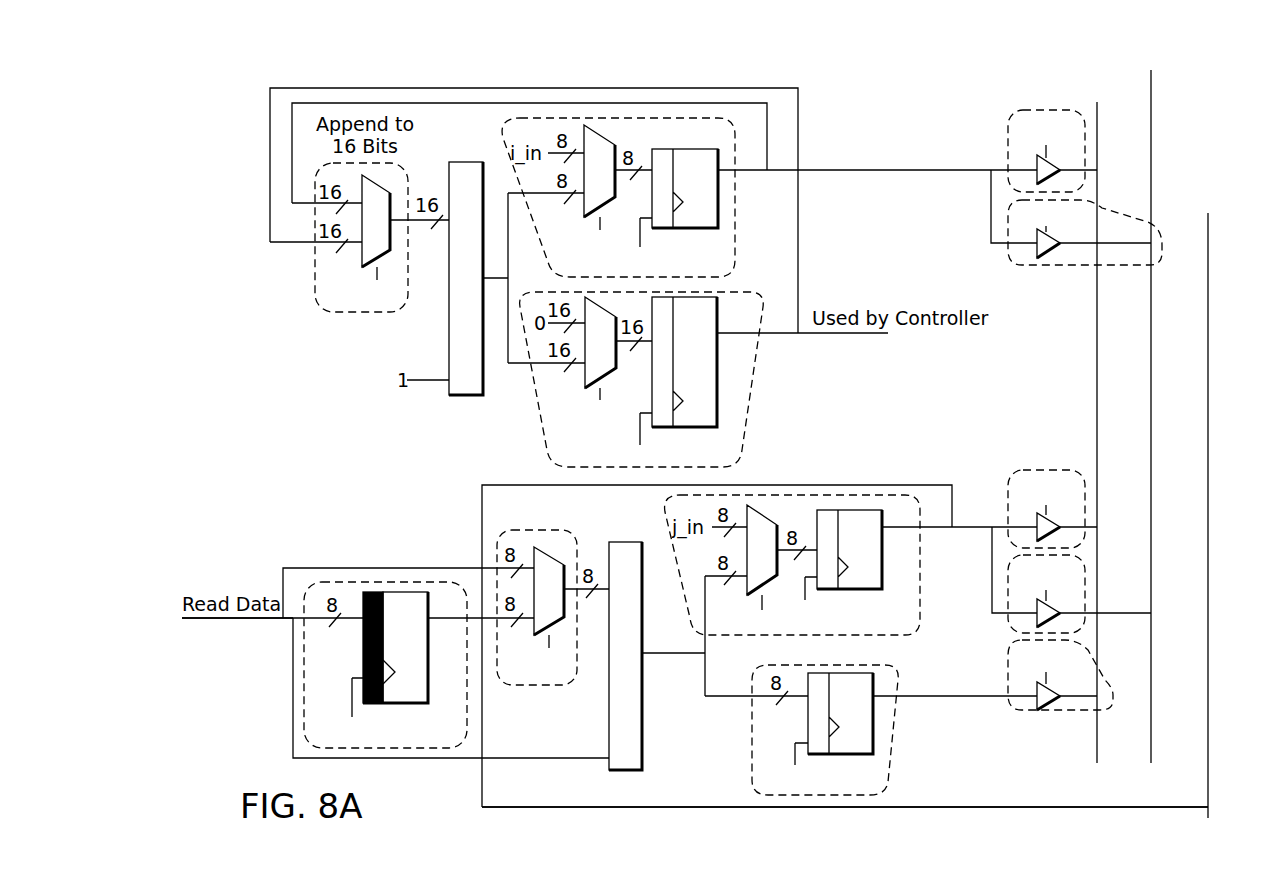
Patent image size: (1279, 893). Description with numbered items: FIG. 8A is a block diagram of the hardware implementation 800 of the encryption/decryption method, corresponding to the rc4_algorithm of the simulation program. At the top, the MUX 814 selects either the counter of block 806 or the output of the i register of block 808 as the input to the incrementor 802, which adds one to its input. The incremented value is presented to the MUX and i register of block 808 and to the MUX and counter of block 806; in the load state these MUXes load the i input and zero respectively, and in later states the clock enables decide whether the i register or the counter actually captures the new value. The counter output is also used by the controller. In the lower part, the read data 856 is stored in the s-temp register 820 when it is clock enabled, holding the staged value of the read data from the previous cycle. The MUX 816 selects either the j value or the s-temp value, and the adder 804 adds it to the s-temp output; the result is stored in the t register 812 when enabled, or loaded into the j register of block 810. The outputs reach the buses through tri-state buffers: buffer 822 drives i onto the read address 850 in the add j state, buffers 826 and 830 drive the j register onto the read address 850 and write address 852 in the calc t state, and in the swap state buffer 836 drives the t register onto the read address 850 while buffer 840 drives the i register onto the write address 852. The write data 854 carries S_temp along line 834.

The encryption circuit hardware implementation 800 is at (248, 70).
The incrementor 802 is at (474, 160).
The adder 804 is at (623, 542).
The counter block 806 is at (752, 372).
The i register block 808 is at (735, 234).
The j register block 810 is at (920, 556).
The t register 812 is at (890, 738).
The swap MUX 814 is at (343, 322).
The add j MUX 816 is at (550, 530).
The s-temp register 820 is at (388, 582).
The add j tri-state buffer 822 is at (1008, 122).
The calc t read tri-state buffer 826 is at (1050, 470).
The calc t write tri-state buffer 830 is at (1009, 627).
The write data line 834 is at (946, 808).
The swap read tri-state buffer 836 is at (1058, 713).
The swap write tri-state buffer 840 is at (1108, 213).
The read address 850 is at (1044, 75).
The write address 852 is at (1183, 70).
The write data 854 is at (1208, 190).
The read data 856 is at (210, 585).